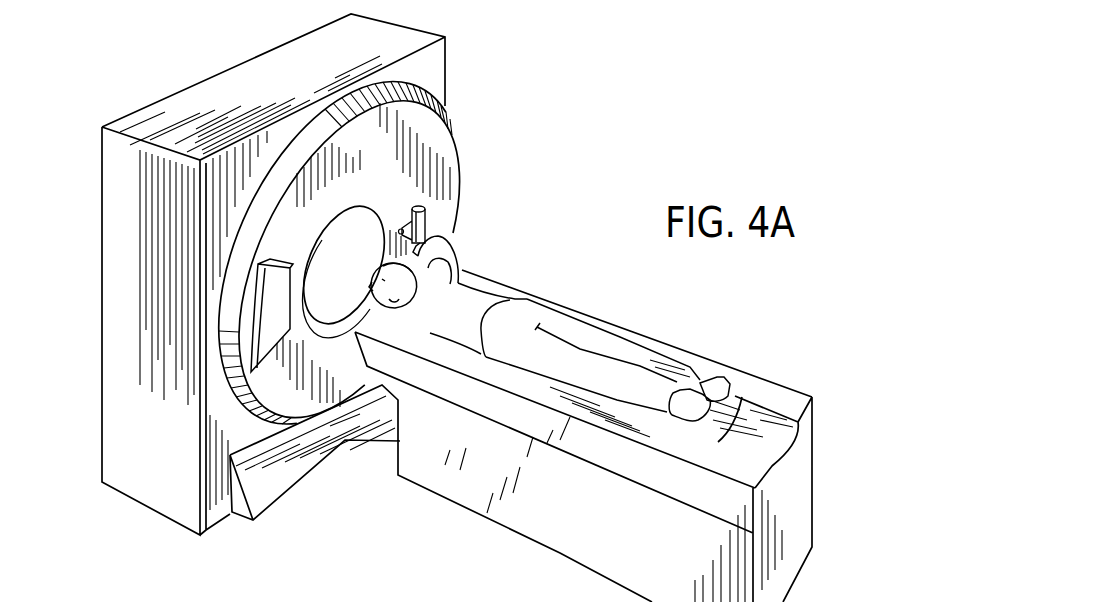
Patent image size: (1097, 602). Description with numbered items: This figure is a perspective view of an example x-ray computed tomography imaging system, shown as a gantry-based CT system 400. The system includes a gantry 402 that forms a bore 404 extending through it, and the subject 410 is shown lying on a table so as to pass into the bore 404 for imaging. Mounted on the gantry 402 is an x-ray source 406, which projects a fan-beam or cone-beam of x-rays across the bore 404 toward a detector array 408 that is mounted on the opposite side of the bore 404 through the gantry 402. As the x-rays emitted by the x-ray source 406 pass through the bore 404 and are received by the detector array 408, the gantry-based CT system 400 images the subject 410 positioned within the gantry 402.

The gantry-based CT system 400 is at (457, 308).
The gantry 402 is at (457, 136).
The bore 404 is at (340, 246).
The x-ray source 406 is at (427, 216).
The detector array 408 is at (266, 337).
The subject 410 is at (477, 296).